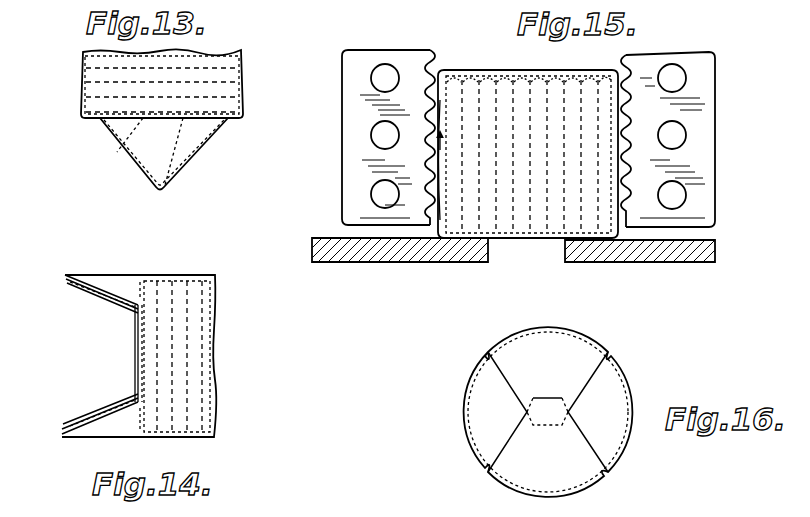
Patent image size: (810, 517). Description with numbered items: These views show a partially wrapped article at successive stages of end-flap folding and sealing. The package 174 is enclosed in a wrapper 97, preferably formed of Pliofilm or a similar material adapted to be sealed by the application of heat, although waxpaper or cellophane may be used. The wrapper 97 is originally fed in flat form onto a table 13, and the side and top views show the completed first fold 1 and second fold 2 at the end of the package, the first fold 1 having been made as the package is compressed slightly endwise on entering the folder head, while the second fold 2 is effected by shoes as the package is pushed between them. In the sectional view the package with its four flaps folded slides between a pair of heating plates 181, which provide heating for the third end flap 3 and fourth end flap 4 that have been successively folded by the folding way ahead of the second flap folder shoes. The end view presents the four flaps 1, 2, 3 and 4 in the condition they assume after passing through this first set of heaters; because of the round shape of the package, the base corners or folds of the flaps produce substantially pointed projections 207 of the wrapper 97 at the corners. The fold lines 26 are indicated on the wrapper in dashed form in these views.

In FIG. 13, the first end fold 1 is at (203, 120).
In FIG. 14, the first end fold 1 is at (150, 370).
In FIG. 16, the first end fold 1 is at (603, 411).
In FIG. 13, the second end flap fold 2 is at (117, 152).
In FIG. 14, the second end flap fold 2 is at (135, 328).
In FIG. 16, the second end flap fold 2 is at (500, 412).
In FIG. 13, the third end flap 3 is at (187, 147).
In FIG. 14, the third end flap 3 is at (96, 297).
In FIG. 16, the third end flap 3 is at (545, 359).
In FIG. 14, the fourth end flap 4 is at (96, 418).
In FIG. 16, the fourth end flap 4 is at (545, 462).
In FIG. 15, the table 13 is at (385, 255).
In FIG. 13, the fold lines 26 is at (88, 97).
In FIG. 14, the fold lines 26 is at (207, 396).
In FIG. 15, the fold lines 26 is at (604, 72).
In FIG. 13, the wrapper 97 is at (233, 77).
In FIG. 14, the wrapper 97 is at (177, 275).
In FIG. 15, the wrapper 97 is at (482, 70).
In FIG. 16, the wrapper 97 is at (612, 395).
In FIG. 15, the package 174 is at (533, 202).
In FIG. 15, the heating plates 181 is at (377, 55).
In FIG. 16, the pointed projections 207 is at (488, 352).